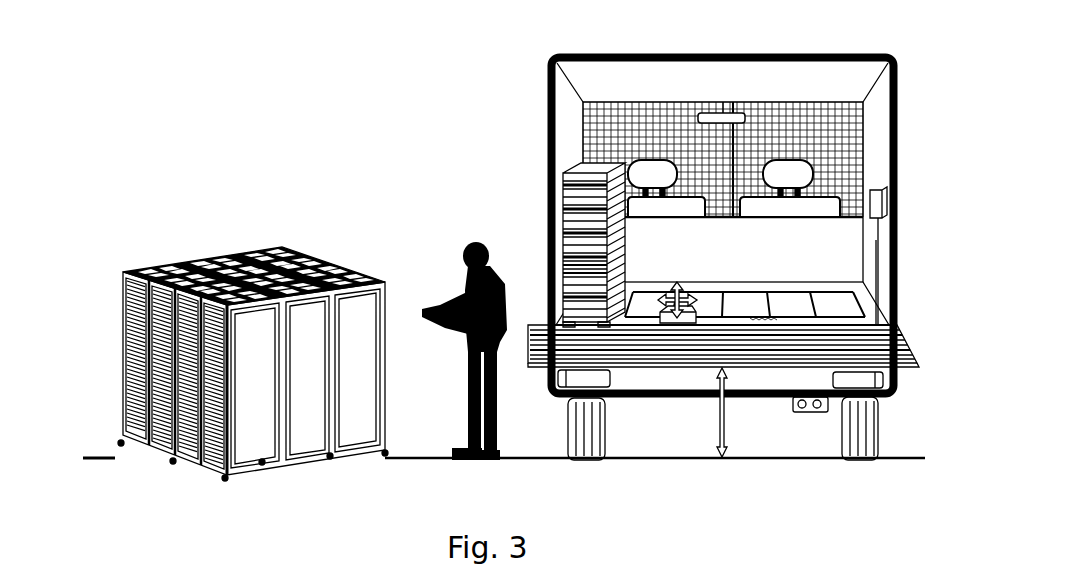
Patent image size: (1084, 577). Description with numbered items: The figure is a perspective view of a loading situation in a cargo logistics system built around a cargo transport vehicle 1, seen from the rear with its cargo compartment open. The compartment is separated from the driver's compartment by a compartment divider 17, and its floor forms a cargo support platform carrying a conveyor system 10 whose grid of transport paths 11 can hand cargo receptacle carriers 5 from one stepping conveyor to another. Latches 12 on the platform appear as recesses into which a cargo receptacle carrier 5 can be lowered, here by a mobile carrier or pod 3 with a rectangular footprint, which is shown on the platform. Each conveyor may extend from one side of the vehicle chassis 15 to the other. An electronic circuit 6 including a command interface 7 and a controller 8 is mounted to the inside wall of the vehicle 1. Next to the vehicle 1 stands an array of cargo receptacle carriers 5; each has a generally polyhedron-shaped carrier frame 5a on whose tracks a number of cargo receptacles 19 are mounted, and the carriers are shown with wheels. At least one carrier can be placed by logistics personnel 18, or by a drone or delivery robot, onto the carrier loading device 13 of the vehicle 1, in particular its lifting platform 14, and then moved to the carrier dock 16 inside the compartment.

The cargo transport vehicle 1 is at (547, 168).
The pod 3 is at (677, 323).
The cargo receptacle carrier 5 is at (560, 200).
The carrier frame 5a is at (582, 222).
The electronic circuit 6 is at (878, 247).
The command interface 7 is at (880, 215).
The controller 8 is at (877, 202).
The conveyor system 10 is at (870, 310).
The transport paths 11 is at (725, 303).
The latches 12 is at (613, 325).
The carrier loading device 13 is at (902, 340).
The lifting platform 14 is at (903, 364).
The vehicle chassis 15 is at (895, 265).
The carrier dock 16 is at (658, 321).
The compartment divider 17 is at (807, 237).
The logistics personnel 18 is at (478, 460).
The cargo receptacles 19 is at (128, 397).